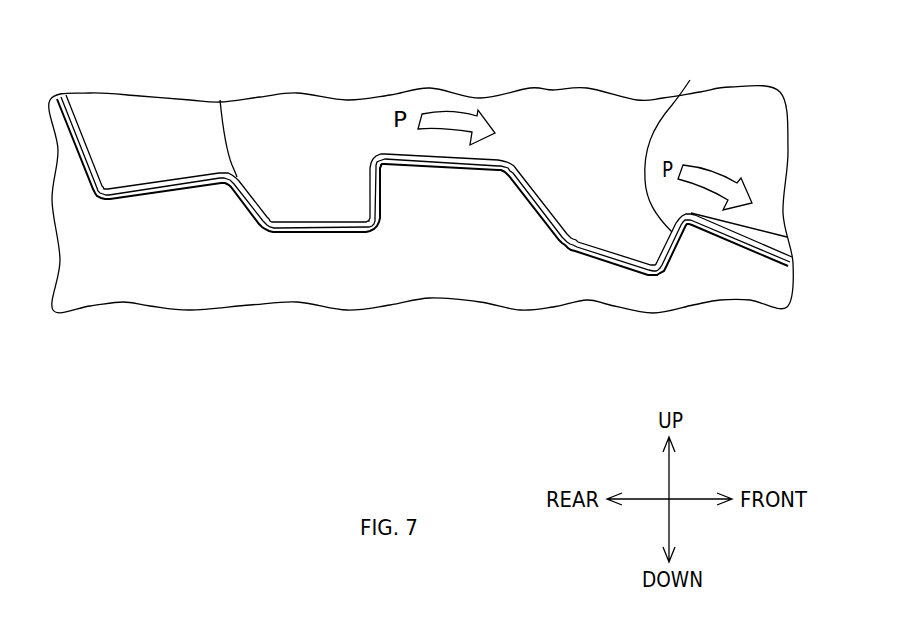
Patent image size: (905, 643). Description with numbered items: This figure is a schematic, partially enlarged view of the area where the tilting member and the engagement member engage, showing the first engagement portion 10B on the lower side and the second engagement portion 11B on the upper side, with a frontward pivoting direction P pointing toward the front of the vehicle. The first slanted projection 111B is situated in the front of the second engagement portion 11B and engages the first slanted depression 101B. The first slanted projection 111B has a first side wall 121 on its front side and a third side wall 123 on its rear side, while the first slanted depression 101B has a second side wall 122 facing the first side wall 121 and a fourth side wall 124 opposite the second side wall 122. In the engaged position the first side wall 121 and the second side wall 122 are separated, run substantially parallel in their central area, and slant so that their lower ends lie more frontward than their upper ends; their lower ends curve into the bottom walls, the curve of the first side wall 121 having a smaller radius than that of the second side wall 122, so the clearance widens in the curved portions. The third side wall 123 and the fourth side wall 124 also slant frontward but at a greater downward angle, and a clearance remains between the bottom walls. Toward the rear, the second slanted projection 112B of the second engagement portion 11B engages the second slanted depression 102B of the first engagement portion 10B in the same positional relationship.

The first engagement portion 10B is at (213, 220).
The second engagement portion 11B is at (197, 145).
The second slanted projection 112B is at (308, 197).
The second slanted depression 102B is at (312, 232).
The third side wall 123 is at (540, 197).
The fourth side wall 124 is at (545, 221).
The first slanted projection 111B is at (610, 226).
The first slanted depression 101B is at (608, 263).
The first side wall 121 is at (690, 80).
The second side wall 122 is at (675, 257).